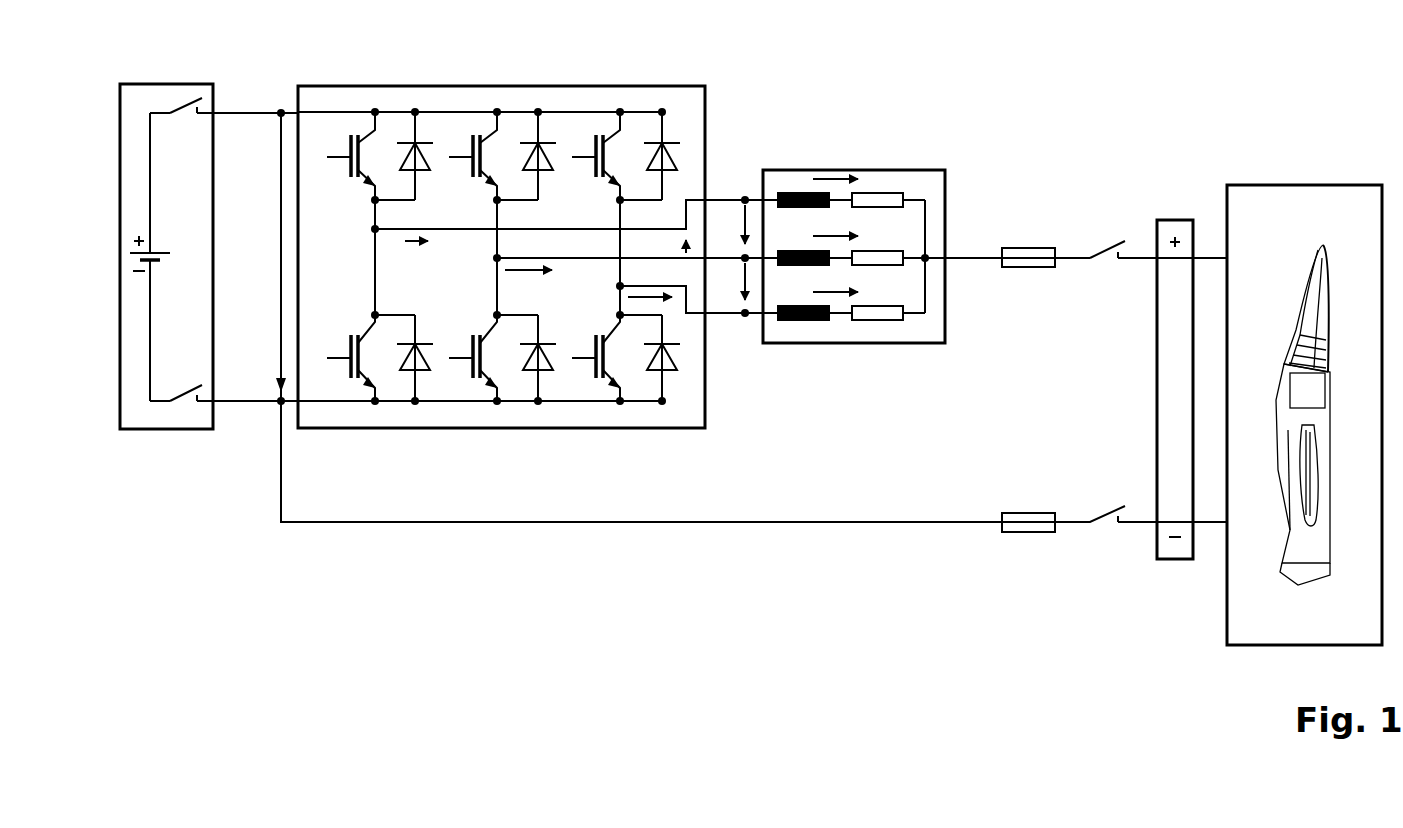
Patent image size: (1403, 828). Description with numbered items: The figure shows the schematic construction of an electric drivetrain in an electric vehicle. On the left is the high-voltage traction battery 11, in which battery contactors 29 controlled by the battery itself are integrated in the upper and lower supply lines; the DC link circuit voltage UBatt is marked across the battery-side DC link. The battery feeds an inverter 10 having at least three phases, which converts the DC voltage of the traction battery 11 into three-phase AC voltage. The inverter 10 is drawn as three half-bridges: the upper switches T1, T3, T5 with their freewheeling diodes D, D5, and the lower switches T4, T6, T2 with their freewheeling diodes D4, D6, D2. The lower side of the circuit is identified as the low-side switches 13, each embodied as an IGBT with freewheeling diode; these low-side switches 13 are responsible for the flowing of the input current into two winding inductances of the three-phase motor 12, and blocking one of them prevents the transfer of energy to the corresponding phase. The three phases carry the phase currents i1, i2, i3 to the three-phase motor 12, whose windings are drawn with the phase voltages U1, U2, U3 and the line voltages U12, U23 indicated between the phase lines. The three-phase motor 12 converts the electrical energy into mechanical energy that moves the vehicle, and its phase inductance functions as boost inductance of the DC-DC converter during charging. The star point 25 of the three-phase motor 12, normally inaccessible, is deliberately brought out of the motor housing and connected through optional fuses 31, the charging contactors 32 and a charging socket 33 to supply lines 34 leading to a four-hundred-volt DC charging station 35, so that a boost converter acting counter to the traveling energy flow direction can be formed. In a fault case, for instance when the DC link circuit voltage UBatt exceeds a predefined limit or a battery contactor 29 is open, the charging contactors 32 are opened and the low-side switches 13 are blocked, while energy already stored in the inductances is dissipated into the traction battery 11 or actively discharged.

The high-voltage traction battery 11 is at (143, 84).
The battery contactors 29 is at (183, 98).
The inverter 10 is at (513, 86).
The transistor T1 is at (346, 140).
The transistor T3 is at (452, 160).
The transistor T5 is at (577, 160).
The freewheeling diodes D1 D3 D is at (414, 136).
The freewheeling diode D5 is at (696, 148).
The transistor T4 is at (346, 376).
The transistor T6 is at (476, 378).
The transistor T2 is at (600, 378).
The freewheeling diode D4 is at (413, 372).
The freewheeling diode D6 is at (540, 375).
The freewheeling diode D2 is at (668, 375).
The low-side switches 13 is at (506, 428).
The three-phase motor 12 is at (902, 170).
The star point 25 is at (928, 264).
The fuse 31 is at (1027, 248).
The charging contactors 32 is at (1103, 248).
The charging socket 33 is at (1175, 220).
The supply lines 34 is at (1213, 257).
The DC charging station 35 is at (1305, 185).
The DC link circuit voltage UBatt is at (281, 360).
The phase voltage 1 U1 is at (832, 172).
The phase voltage 2 U2 is at (843, 214).
The phase voltage 3 U3 is at (850, 355).
The line voltage 12 U12 is at (746, 192).
The line voltage 23 U23 is at (745, 315).
The phase current 1 i1 is at (402, 250).
The phase current 2 i2 is at (530, 278).
The phase current 3 i3 is at (625, 292).